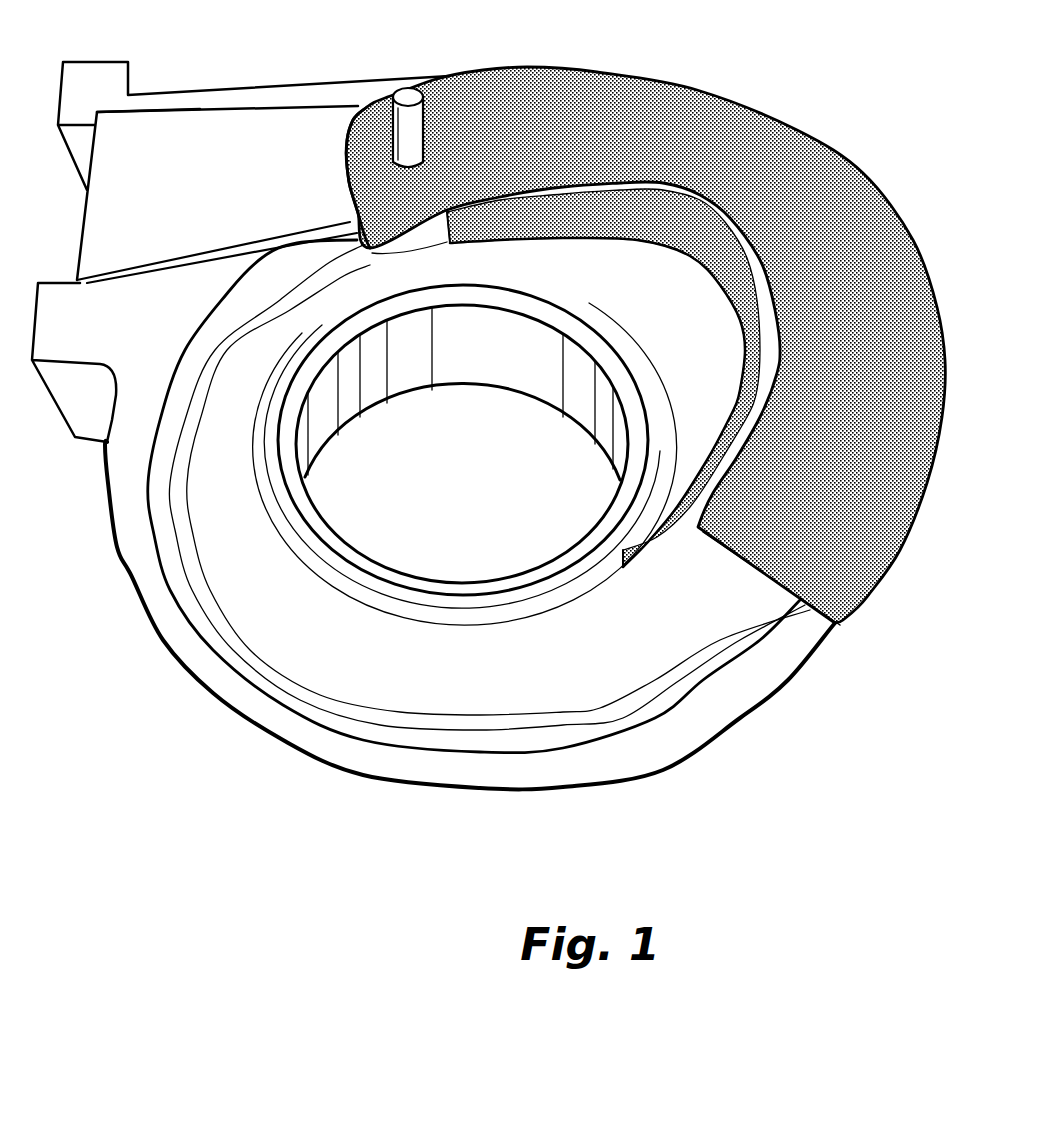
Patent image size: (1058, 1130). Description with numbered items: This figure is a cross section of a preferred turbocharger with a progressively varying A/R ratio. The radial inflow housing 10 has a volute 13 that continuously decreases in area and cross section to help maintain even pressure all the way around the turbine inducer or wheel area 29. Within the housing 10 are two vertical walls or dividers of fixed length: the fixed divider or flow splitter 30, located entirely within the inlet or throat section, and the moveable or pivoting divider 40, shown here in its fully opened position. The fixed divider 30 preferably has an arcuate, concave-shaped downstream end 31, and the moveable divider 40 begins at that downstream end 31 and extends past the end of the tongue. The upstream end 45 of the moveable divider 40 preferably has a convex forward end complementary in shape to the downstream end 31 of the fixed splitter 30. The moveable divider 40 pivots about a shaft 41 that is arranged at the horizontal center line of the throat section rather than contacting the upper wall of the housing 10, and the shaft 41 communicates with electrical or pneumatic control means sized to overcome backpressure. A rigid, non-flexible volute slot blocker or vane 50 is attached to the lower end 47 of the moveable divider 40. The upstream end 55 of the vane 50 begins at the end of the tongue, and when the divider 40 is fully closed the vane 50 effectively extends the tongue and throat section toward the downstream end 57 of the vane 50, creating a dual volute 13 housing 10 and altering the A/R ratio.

The housing 10 is at (283, 740).
The volute 13 is at (523, 672).
The turbine inducer or wheel area 29 is at (318, 437).
The fixed divider or flow splitter 30 is at (199, 125).
The downstream end of fixed divider 31 is at (348, 135).
The moveable divider 40 is at (660, 123).
The shaft 41 is at (405, 100).
The upstream end of moveable divider 45 is at (350, 223).
The lower end of moveable divider 47 is at (340, 246).
The volute slot blocker or vane 50 is at (663, 547).
The upstream end of vane 55 is at (445, 233).
The downstream end of vane 57 is at (618, 550).